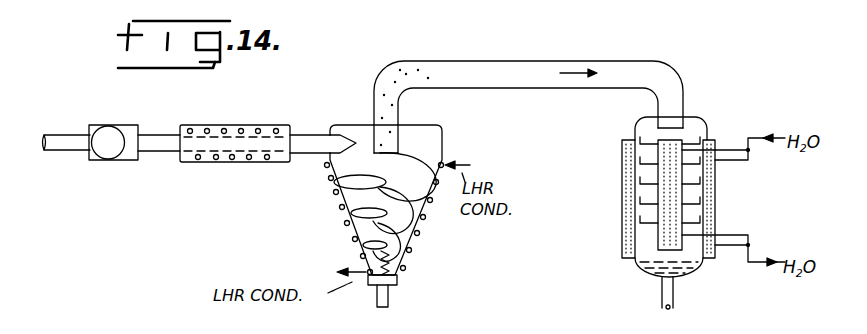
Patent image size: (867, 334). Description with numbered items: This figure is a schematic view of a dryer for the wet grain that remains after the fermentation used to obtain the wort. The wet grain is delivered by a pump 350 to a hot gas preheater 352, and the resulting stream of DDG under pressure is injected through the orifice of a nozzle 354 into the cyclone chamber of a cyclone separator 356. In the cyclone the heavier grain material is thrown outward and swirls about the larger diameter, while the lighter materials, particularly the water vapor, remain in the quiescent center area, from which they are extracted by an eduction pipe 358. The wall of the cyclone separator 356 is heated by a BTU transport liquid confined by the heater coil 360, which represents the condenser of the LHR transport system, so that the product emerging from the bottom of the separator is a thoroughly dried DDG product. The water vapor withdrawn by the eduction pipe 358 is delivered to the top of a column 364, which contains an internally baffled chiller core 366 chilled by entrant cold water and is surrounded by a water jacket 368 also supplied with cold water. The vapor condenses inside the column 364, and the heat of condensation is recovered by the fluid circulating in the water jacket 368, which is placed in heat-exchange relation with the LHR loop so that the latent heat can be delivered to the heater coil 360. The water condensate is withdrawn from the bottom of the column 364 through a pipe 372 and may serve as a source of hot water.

The pump 350 is at (115, 150).
The hot gas preheater 352 is at (241, 163).
The nozzle 354 is at (348, 138).
The cyclone separator 356 is at (340, 198).
The eduction pipe 358 is at (465, 42).
The heater coil 360 is at (417, 233).
The column 364 is at (697, 111).
The internally baffled chiller core 366 is at (682, 195).
The water jacket 368 is at (622, 181).
The pipe 372 is at (665, 306).